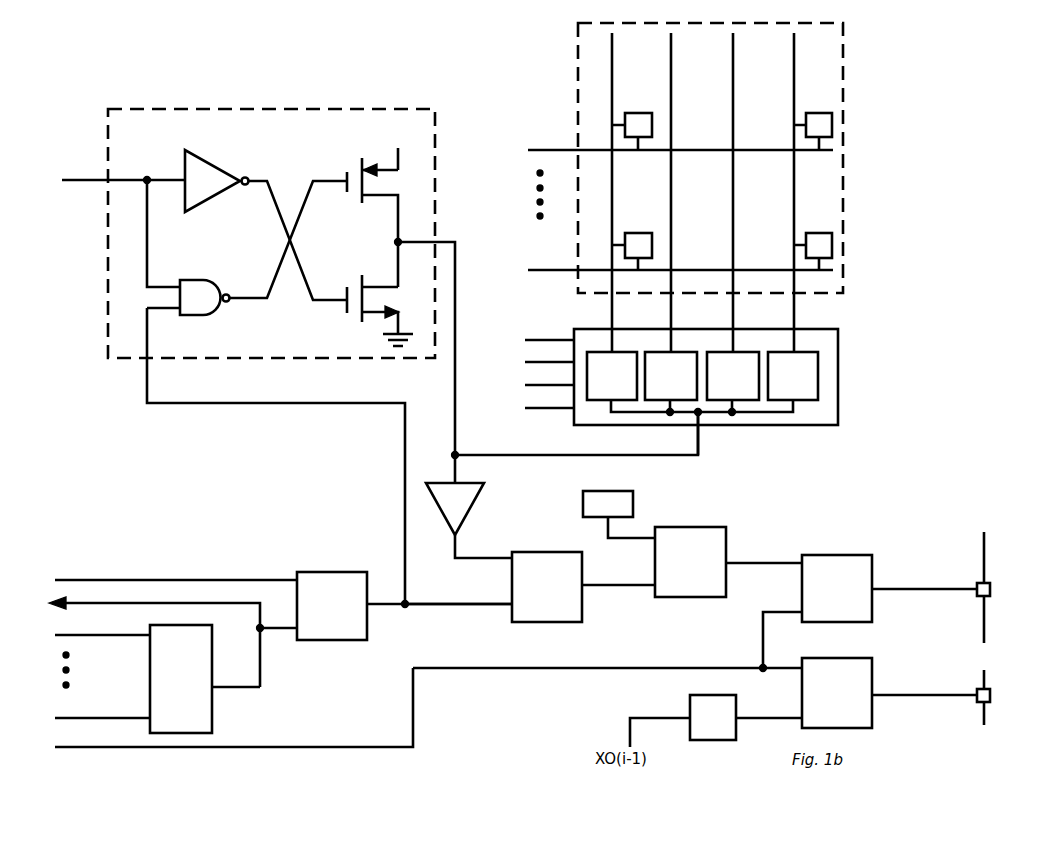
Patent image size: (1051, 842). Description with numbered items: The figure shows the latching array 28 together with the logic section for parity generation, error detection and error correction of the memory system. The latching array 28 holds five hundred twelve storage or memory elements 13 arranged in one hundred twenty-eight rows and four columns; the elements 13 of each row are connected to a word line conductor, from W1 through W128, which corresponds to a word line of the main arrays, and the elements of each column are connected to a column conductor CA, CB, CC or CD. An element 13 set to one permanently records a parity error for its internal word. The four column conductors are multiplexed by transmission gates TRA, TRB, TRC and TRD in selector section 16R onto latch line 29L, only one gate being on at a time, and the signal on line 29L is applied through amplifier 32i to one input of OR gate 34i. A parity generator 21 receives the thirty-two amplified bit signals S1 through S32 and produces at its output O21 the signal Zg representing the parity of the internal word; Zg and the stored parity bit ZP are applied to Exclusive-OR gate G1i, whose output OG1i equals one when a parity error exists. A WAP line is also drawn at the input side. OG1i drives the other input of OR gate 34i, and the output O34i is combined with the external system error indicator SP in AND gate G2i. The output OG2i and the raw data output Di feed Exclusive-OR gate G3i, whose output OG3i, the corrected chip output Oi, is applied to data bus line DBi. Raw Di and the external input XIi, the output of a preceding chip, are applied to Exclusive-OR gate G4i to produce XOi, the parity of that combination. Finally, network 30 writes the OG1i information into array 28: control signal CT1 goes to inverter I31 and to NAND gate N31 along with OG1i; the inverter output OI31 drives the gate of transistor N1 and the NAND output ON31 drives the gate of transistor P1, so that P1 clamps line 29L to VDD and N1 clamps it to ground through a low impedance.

The network 30 is at (296, 118).
The control signal CT1 is at (123, 171).
The inverter I31 is at (205, 172).
The output of inverter I31 OI31 is at (298, 229).
The two-input NAND gate N31 is at (194, 290).
The output of NAND gate N31 ON31 is at (288, 252).
The insulated-gate field-effect transistor P1 is at (421, 193).
The insulated-gate field-effect transistor N1 is at (420, 313).
The supply voltage source VDD is at (400, 148).
The latch line 29L is at (459, 452).
The latching array 28 is at (840, 68).
The column (bit) conductor CA is at (614, 64).
The column (bit) conductor CB is at (673, 64).
The column (bit) conductor CC is at (735, 64).
The column (bit) conductor CD is at (796, 64).
The word line conductor W1 is at (680, 138).
The word line conductor W128 is at (674, 258).
The storage or memory element 13 is at (722, 191).
The selector section 16R is at (808, 420).
The transmission gate TRA is at (612, 376).
The transmission gate TRB is at (671, 376).
The transmission gate TRC is at (733, 376).
The transmission gate TRD is at (793, 376).
The amplifier 32i is at (464, 500).
The two-input OR gate 34i is at (528, 563).
The output of OR gate 34i O34i is at (618, 574).
The system error indicator signal SP is at (619, 514).
The AND gate G2i is at (672, 536).
The output of AND gate G2i OG2i is at (764, 552).
The two-input Exclusive-OR gate G3i is at (818, 562).
The corrected chip output Oi is at (924, 578).
The output of Exclusive-OR gate G3i OG3i is at (873, 593).
The data bus line DBi is at (984, 545).
The Exclusive-OR gate G4i is at (826, 667).
The parity output signal XOi is at (931, 697).
The external input signal XIi is at (716, 721).
The two-input Exclusive-OR gate G1i is at (313, 579).
The output of Exclusive-OR gate G1i OG1i is at (398, 623).
The parity bit ZP is at (176, 569).
The write-all-pages signal WAP is at (156, 634).
The Sj signal S1 is at (102, 624).
The Sj signal S32 is at (102, 707).
The raw data output Di is at (234, 707).
The parity generator 21 is at (181, 679).
The output of parity generator 21 O21 is at (213, 689).
The generated parity signal Zg is at (284, 674).